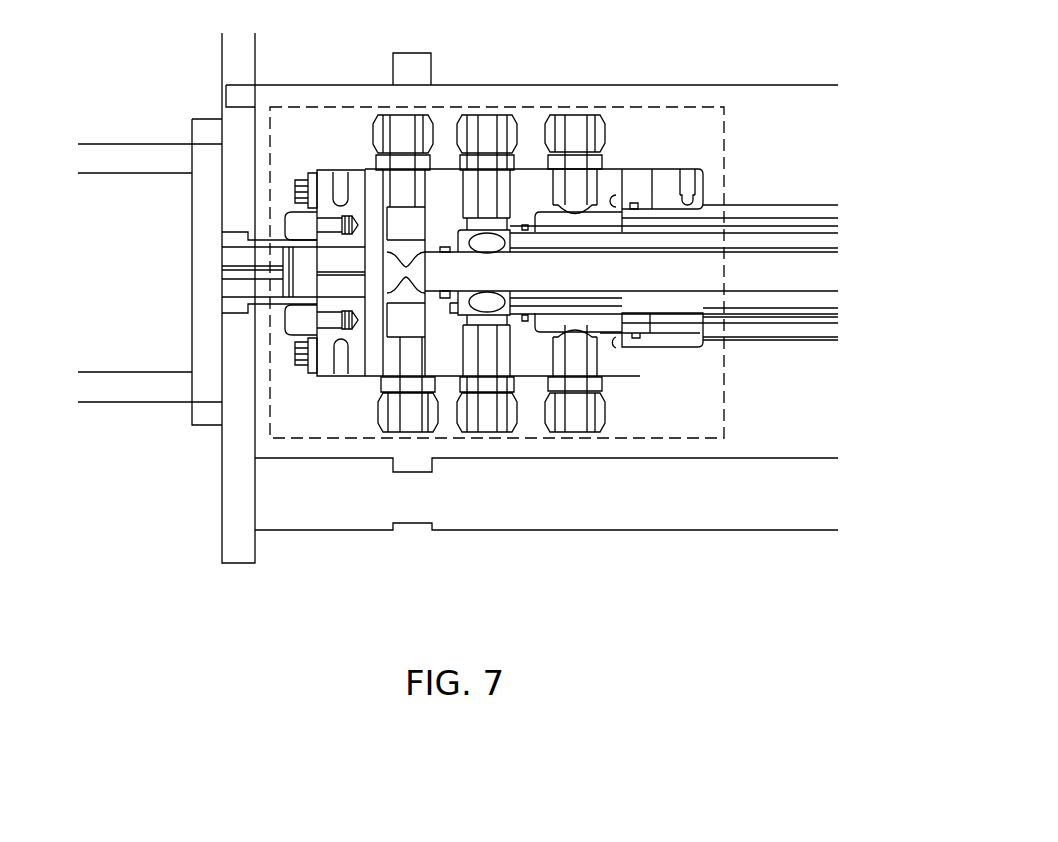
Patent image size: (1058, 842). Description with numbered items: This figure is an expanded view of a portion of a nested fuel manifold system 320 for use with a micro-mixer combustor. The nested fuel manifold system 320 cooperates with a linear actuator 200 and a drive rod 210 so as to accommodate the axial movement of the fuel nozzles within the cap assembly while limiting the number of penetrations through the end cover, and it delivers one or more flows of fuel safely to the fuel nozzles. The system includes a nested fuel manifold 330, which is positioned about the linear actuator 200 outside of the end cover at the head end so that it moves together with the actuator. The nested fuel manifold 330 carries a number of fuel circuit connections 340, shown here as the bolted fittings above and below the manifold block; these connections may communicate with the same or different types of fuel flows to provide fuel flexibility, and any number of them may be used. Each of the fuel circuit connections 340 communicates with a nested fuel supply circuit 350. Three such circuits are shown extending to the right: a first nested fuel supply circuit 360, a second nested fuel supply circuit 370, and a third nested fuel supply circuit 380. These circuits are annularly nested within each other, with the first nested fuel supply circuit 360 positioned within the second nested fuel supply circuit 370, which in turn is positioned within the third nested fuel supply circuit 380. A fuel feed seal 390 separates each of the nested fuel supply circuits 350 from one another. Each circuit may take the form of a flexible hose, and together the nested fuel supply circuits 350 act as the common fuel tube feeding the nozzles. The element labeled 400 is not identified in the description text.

The linear actuator 200 is at (108, 143).
The drive rod 210 is at (252, 308).
The nested fuel manifold system 320 is at (185, 96).
The nested fuel manifold 330 is at (315, 398).
The fuel circuit connections 340 is at (475, 433).
The nested fuel supply circuit 350 is at (848, 215).
The first nested fuel supply circuit 360 is at (668, 278).
The second nested fuel supply circuit 370 is at (758, 302).
The third nested fuel supply circuit 380 is at (823, 315).
The fuel feed seal 390 is at (637, 341).
The shaft 400 is at (823, 291).